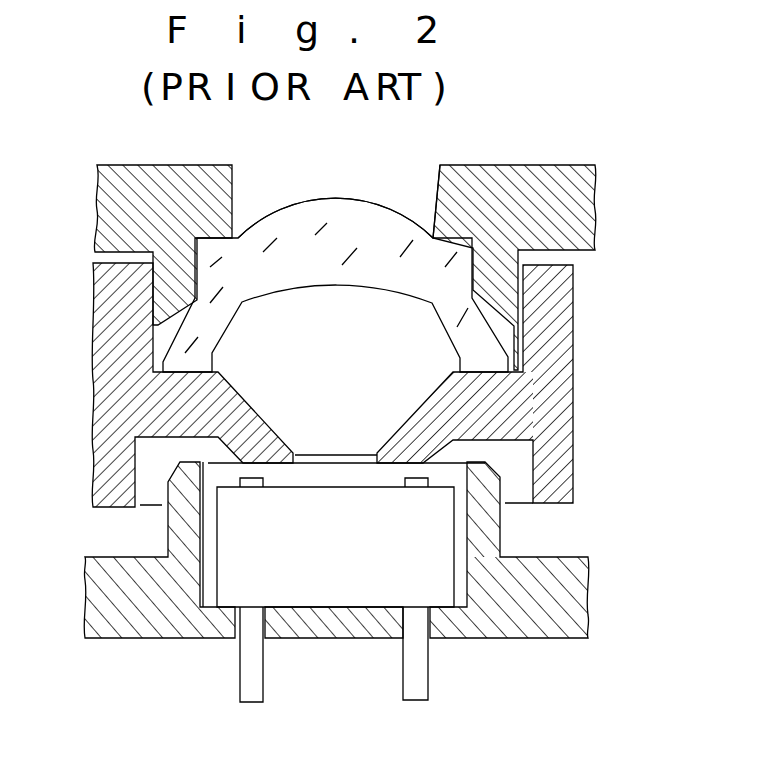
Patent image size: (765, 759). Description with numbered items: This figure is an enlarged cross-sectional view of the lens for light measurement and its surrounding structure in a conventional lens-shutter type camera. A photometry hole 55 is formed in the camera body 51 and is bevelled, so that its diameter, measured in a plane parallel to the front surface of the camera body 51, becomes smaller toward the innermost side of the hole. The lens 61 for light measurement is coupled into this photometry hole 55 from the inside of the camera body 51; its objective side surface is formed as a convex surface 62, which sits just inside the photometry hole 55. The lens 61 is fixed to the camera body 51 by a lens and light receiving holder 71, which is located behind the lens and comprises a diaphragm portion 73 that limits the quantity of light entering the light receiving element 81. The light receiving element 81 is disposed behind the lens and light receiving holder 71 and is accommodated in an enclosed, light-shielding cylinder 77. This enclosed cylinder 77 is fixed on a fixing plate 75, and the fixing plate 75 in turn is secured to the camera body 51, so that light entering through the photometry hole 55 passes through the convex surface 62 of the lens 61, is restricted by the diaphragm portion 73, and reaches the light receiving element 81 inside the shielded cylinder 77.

The camera body 51 is at (540, 163).
The photometry hole 55 is at (433, 235).
The lens for light measurement 61 is at (353, 220).
The convex surface 62 is at (280, 208).
The lens and light receiving holder 71 is at (359, 385).
The diaphragm portion 73 is at (418, 400).
The fixing plate 75 is at (520, 628).
The enclosed cylinder 77 is at (356, 550).
The light receiving element 81 is at (337, 595).